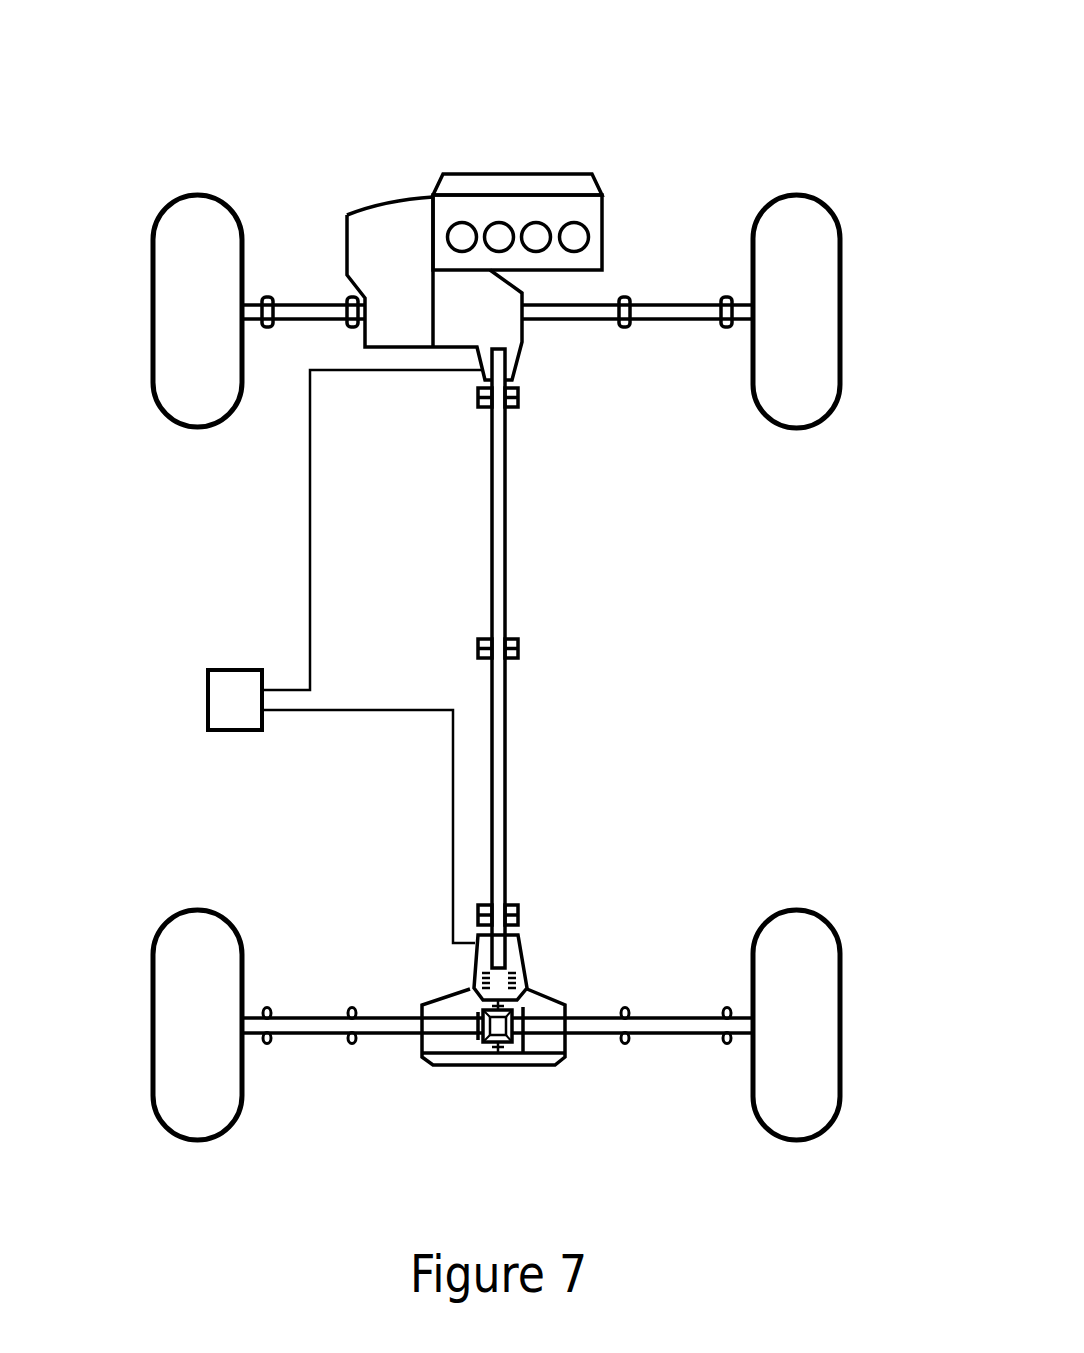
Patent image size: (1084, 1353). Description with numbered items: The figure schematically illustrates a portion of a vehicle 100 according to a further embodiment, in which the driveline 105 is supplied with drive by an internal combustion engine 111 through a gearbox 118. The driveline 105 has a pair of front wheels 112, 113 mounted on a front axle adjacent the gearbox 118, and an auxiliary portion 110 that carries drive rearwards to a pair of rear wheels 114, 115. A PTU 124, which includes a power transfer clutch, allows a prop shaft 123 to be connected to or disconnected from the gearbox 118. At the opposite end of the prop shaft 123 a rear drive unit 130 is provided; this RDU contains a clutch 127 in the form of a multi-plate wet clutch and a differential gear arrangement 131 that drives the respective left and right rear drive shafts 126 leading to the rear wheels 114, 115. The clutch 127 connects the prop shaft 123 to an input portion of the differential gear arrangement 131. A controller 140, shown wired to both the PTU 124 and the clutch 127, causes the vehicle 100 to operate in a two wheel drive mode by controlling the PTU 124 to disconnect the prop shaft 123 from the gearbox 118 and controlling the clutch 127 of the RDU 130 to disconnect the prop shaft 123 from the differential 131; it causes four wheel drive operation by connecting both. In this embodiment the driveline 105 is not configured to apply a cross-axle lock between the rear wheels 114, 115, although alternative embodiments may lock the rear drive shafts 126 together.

The vehicle 100 is at (743, 83).
The driveline 105 is at (592, 445).
The auxiliary portion 110 is at (625, 662).
The internal combustion engine 111 is at (592, 213).
The front wheel 112 is at (185, 238).
The front wheel 113 is at (815, 237).
The rear wheel 114 is at (185, 1098).
The rear wheel 115 is at (813, 1098).
The gearbox 118 is at (380, 225).
The prop shaft 123 is at (508, 540).
The PTU 124 is at (517, 365).
The rear drive shafts 126 is at (313, 1025).
The clutch 127 is at (475, 978).
The rear drive unit 130 is at (540, 995).
The differential gear arrangement 131 is at (488, 1044).
The controller 140 is at (218, 688).